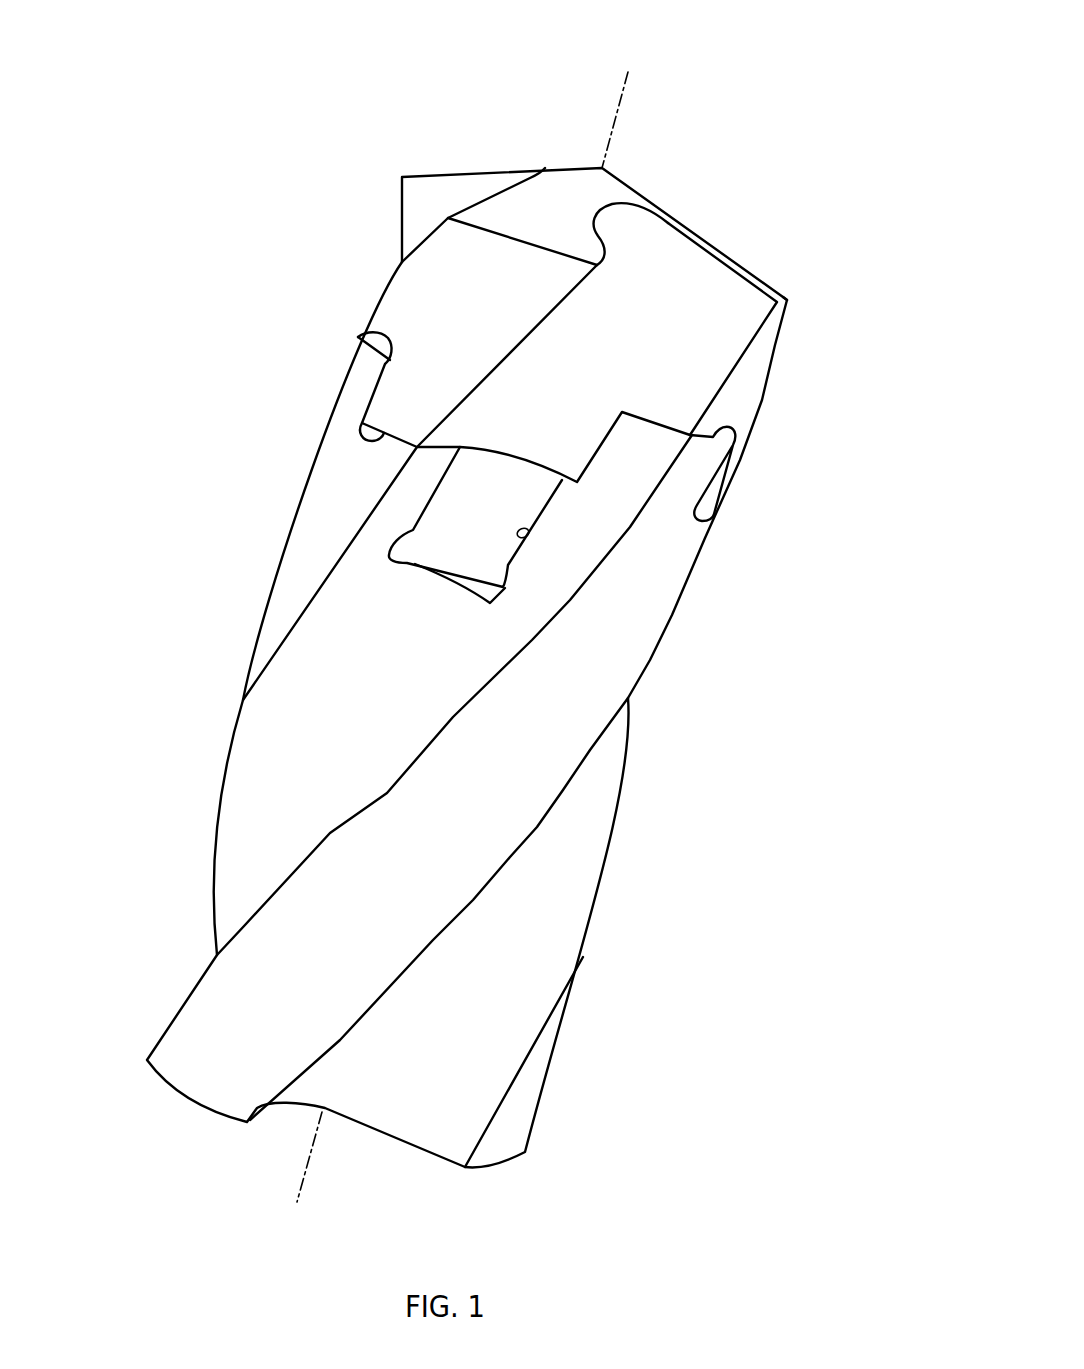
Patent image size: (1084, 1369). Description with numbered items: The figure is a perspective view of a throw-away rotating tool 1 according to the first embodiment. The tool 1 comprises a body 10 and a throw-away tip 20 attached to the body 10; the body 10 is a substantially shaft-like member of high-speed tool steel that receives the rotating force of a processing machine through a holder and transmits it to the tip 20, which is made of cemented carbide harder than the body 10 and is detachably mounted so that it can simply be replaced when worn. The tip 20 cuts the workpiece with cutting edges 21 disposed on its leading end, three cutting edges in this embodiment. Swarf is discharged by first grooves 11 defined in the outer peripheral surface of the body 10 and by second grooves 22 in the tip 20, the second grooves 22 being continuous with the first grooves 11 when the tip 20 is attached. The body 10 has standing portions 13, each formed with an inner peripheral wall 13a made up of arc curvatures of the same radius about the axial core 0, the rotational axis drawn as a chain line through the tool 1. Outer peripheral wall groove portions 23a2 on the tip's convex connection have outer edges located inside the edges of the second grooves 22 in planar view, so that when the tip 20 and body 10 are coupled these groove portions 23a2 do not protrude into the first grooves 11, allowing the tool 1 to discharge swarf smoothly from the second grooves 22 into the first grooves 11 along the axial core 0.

The throw-away rotating tool 1 is at (820, 69).
The body 10 is at (772, 719).
The first grooves 11 is at (242, 807).
The standing portions 13 is at (697, 560).
The inner peripheral wall 13a is at (529, 535).
The throw-away tip 20 is at (779, 197).
The cutting edges 21 is at (603, 216).
The second grooves 22 is at (725, 343).
The outer peripheral wall groove portions 23a2 is at (422, 557).
The axial core 0 is at (622, 84).